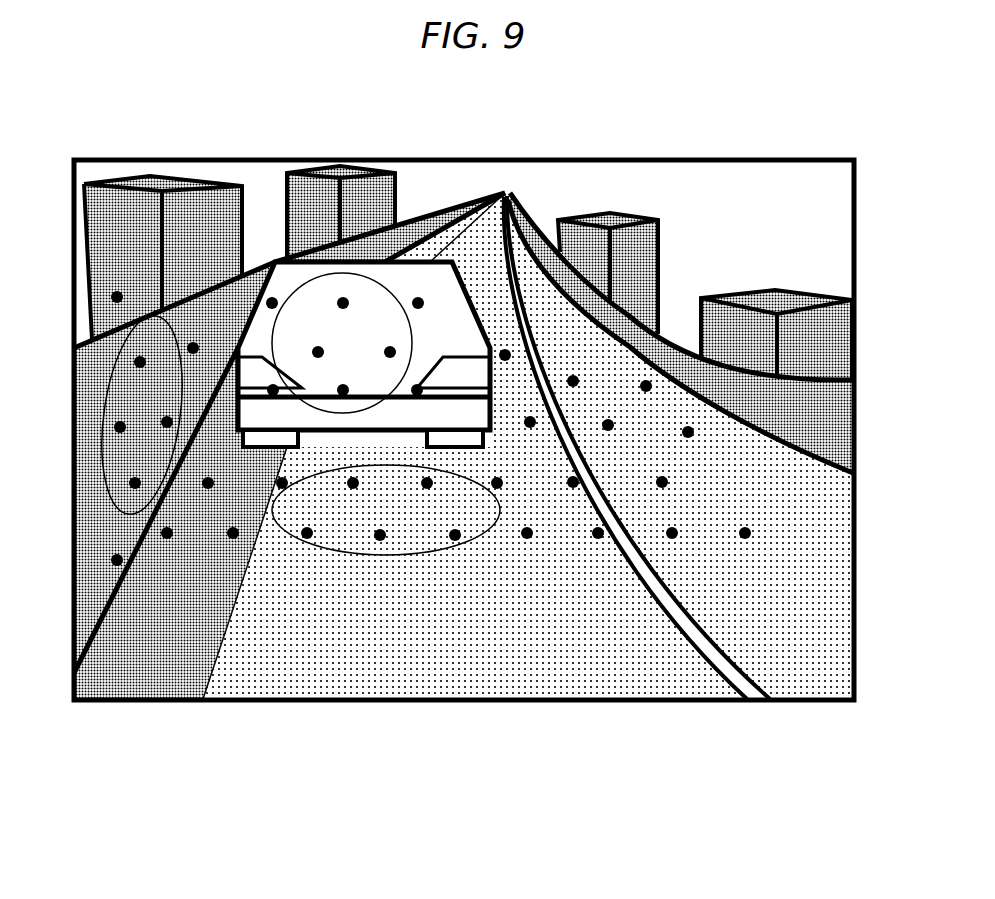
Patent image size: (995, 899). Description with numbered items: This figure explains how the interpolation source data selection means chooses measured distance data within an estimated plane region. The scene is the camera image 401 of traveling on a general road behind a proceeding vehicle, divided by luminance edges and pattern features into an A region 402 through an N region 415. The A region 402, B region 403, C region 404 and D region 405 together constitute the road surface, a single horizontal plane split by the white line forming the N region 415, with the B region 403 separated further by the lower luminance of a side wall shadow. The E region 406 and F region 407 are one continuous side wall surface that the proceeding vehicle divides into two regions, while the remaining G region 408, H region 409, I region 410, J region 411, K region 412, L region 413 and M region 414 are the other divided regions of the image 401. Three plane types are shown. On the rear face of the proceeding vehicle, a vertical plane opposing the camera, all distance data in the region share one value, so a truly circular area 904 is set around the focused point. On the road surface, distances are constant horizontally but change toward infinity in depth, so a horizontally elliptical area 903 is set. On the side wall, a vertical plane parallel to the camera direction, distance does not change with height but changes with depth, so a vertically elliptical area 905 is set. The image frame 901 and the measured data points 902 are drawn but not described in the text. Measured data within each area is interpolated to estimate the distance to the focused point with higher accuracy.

The image 401 is at (345, 706).
The A region 402 is at (478, 622).
The B region 403 is at (170, 647).
The C region 404 is at (458, 204).
The D region 405 is at (785, 668).
The E region 406 is at (98, 553).
The F region 407 is at (405, 218).
The G region 408 is at (857, 437).
The H region 409 is at (293, 290).
The I region 410 is at (150, 174).
The J region 411 is at (342, 167).
The K region 412 is at (607, 210).
The L region 413 is at (778, 287).
The M region 414 is at (712, 260).
The N region 415 is at (757, 698).
The image frame 901 is at (220, 700).
The feature points 902 is at (528, 548).
The horizontally elliptical area 903 is at (335, 563).
The circular area 904 is at (392, 290).
The vertically elliptical area 905 is at (98, 440).